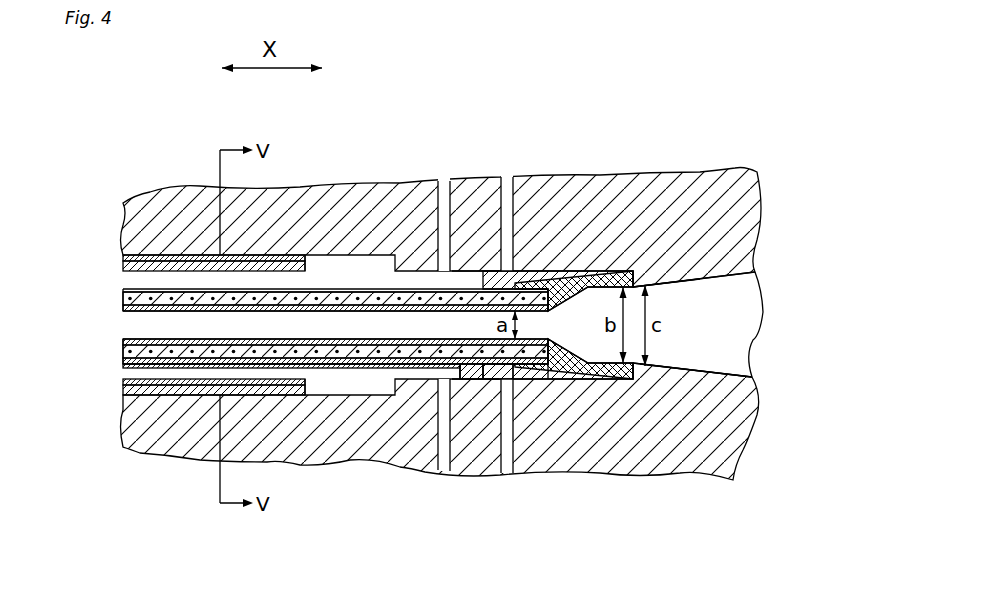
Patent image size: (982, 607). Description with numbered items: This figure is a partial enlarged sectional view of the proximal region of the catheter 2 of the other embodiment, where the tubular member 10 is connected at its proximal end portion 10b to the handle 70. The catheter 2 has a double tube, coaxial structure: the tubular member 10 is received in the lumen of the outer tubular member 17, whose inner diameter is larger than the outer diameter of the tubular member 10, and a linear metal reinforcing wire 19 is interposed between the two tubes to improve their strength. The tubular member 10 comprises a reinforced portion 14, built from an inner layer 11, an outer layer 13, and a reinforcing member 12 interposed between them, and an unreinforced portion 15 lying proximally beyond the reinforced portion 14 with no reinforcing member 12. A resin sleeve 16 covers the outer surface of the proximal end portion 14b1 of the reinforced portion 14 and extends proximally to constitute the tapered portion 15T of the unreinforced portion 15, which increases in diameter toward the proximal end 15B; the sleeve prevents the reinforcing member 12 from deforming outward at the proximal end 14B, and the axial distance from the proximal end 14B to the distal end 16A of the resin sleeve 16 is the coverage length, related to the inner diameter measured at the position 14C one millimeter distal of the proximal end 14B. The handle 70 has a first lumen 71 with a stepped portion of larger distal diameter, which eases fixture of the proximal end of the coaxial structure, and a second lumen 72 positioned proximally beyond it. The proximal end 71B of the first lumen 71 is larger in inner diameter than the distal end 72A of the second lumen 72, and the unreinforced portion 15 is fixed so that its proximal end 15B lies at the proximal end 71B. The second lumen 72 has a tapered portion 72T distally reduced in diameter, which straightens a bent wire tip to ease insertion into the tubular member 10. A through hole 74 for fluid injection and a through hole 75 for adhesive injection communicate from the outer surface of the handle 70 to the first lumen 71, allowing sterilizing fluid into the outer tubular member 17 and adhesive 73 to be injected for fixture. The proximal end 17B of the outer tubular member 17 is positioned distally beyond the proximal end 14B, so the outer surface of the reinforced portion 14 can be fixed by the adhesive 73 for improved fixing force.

The catheter 2 is at (474, 66).
The tubular member 10 is at (212, 370).
The proximal end portion of the tubular member 10b is at (460, 368).
The inner layer 11 is at (122, 308).
The reinforcing member 12 is at (122, 302).
The outer layer 13 is at (122, 297).
The reinforced portion 14 is at (300, 364).
The proximal end of the reinforced portion 14B is at (565, 372).
The proximal end portion of the reinforced portion 14b1 is at (548, 372).
The position apart by 1 mm distally from the proximal end of the reinforced portion 14C is at (485, 372).
The unreinforced portion 15 is at (558, 276).
The tapered portion 15T is at (578, 378).
The proximal end of the unreinforced portion 15B is at (635, 380).
The resin sleeve 16 is at (566, 284).
The distal end of the resin sleeve 16A is at (505, 376).
The outer tubular member 17 is at (122, 291).
The proximal end of the outer tubular member 17B is at (307, 382).
The metal reinforcing wire 19 is at (190, 352).
The handle 70 is at (172, 210).
The first lumen 71 is at (464, 205).
The proximal end of the first lumen 71B is at (650, 270).
The second lumen 72 is at (737, 322).
The distal end of the second lumen 72A is at (636, 280).
The tapered portion of the second lumen 72T is at (737, 370).
The adhesive 73 is at (162, 225).
The through hole for fluid injection 74 is at (441, 205).
The through hole for adhesive injection 75 is at (505, 230).